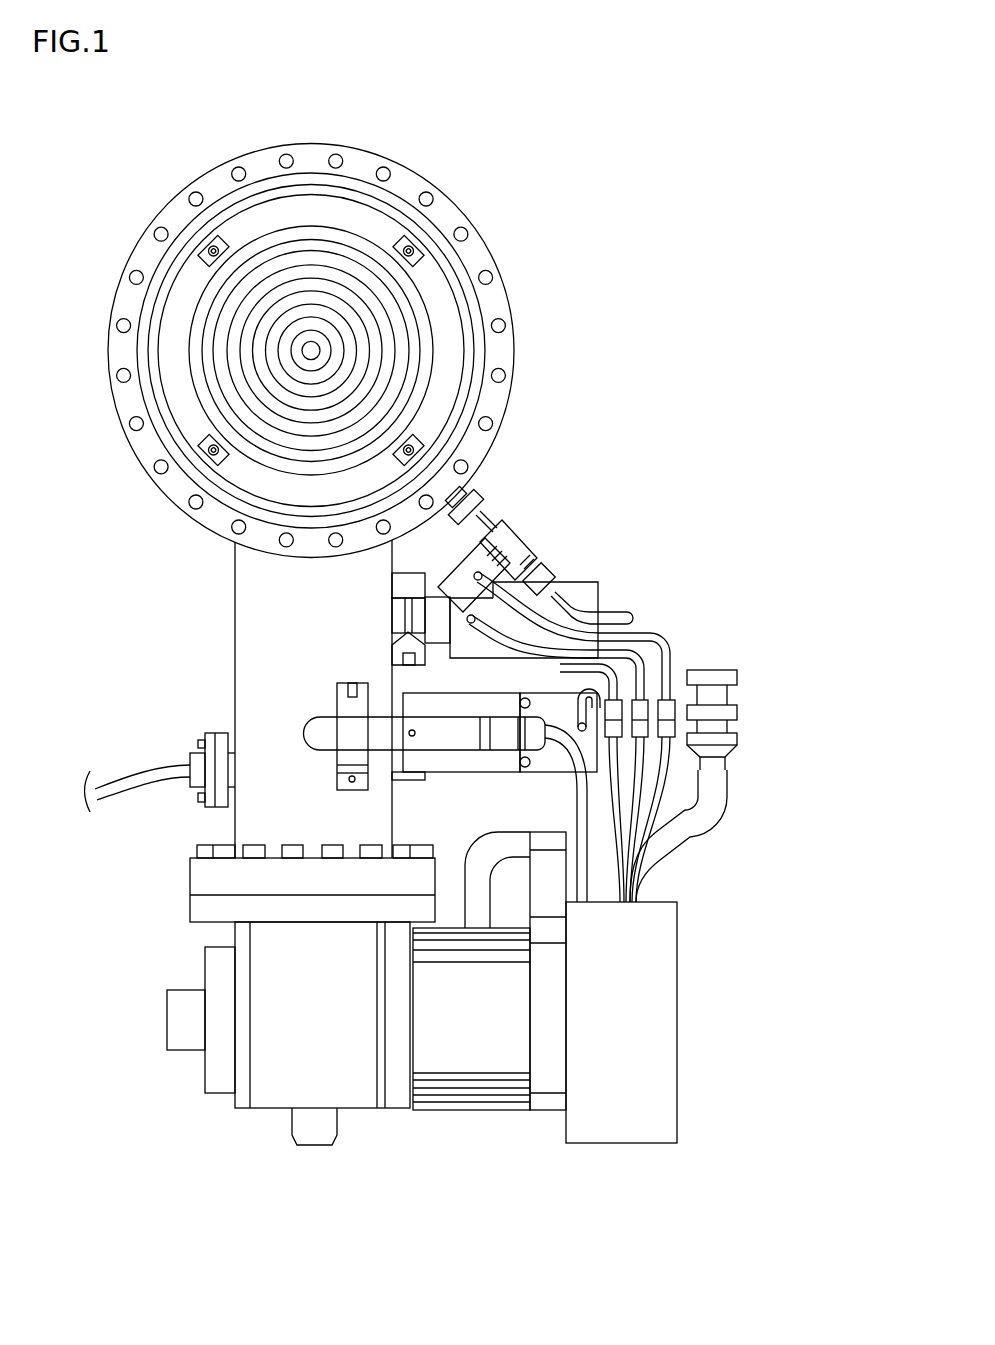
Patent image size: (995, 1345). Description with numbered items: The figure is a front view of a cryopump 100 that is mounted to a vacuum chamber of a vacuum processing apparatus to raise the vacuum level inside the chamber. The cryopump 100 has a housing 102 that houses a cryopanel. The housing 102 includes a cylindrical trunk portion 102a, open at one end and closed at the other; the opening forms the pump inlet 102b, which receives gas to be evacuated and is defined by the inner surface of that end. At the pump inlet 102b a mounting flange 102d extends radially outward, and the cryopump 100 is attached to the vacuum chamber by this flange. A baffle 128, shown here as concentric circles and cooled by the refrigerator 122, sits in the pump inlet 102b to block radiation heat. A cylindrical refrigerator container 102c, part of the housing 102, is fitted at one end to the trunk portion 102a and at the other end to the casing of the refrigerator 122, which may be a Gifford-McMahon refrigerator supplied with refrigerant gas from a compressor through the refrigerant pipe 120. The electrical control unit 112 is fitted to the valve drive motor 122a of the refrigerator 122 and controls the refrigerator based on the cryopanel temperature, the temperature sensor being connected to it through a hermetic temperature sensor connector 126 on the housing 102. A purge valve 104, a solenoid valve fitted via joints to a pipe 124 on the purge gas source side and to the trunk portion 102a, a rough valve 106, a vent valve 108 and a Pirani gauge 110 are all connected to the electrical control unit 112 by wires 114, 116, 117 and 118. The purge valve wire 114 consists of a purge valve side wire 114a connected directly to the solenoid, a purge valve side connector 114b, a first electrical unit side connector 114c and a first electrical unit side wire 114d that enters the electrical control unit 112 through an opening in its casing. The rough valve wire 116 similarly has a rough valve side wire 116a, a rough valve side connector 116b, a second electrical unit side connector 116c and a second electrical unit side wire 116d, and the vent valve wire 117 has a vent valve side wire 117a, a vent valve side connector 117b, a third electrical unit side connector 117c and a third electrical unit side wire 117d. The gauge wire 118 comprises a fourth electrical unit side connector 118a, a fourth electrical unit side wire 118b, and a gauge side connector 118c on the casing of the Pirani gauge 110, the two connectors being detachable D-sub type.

The cryopump 100 is at (432, 1243).
The housing 102 is at (260, 568).
The trunk portion 102a is at (418, 170).
The pump inlet 102b is at (455, 205).
The refrigerator container 102c is at (260, 622).
The mounting flange 102d is at (363, 165).
The purge valve 104 is at (505, 538).
The rough valve 106 is at (583, 590).
The vent valve 108 is at (554, 765).
The Pirani gauge 110 is at (452, 703).
The electrical control unit 112 is at (613, 1128).
The purge valve wire 114 is at (670, 650).
The purge valve side wire 114a is at (648, 643).
The purge valve side connector 114b is at (695, 693).
The first electrical unit side connector 114c is at (712, 757).
The first electrical unit side wire 114d is at (678, 807).
The rough valve wire 116 is at (582, 592).
The rough valve side wire 116a is at (612, 660).
The rough valve side connector 116b is at (672, 672).
The second electrical unit side connector 116c is at (606, 792).
The second electrical unit side wire 116d is at (605, 815).
The vent valve wire 117 is at (638, 852).
The vent valve side wire 117a is at (645, 665).
The vent valve side connector 117b is at (668, 655).
The third electrical unit side connector 117c is at (653, 795).
The third electrical unit side wire 117d is at (643, 828).
The gauge wire 118 is at (583, 877).
The fourth electrical unit side connector 118a is at (542, 753).
The fourth electrical unit side wire 118b is at (587, 867).
The gauge side connector 118c is at (513, 737).
The refrigerant pipe 120 is at (480, 910).
The refrigerator 122 is at (268, 1087).
The valve drive motor 122a is at (445, 1052).
The pipe 124 is at (562, 593).
The temperature sensor connector 126 is at (210, 762).
The baffle 128 is at (272, 240).